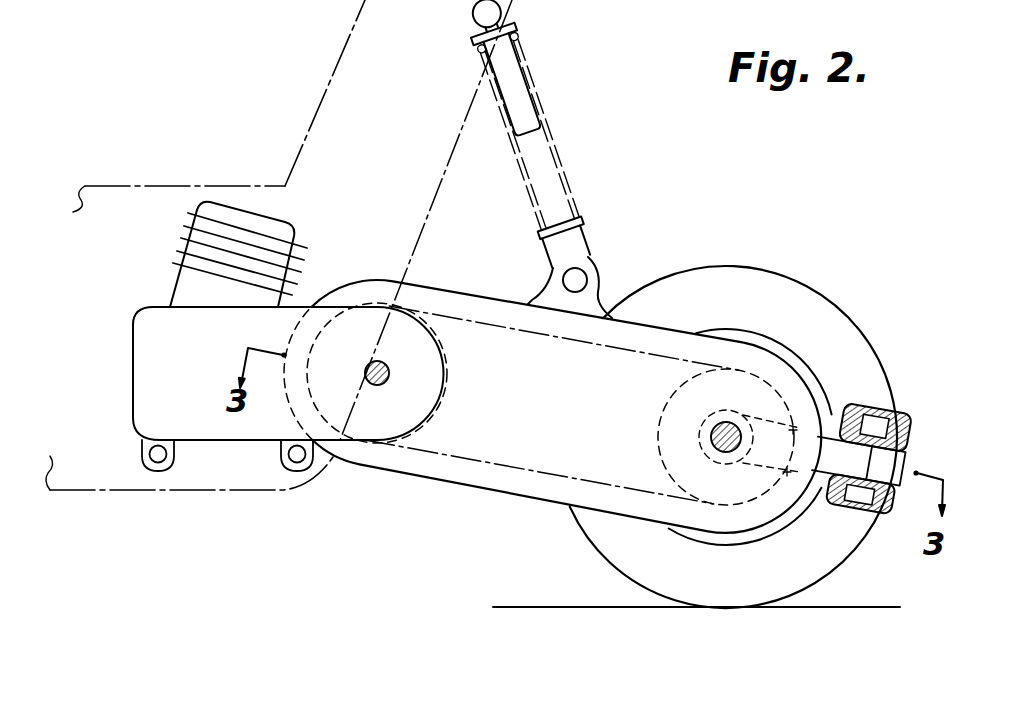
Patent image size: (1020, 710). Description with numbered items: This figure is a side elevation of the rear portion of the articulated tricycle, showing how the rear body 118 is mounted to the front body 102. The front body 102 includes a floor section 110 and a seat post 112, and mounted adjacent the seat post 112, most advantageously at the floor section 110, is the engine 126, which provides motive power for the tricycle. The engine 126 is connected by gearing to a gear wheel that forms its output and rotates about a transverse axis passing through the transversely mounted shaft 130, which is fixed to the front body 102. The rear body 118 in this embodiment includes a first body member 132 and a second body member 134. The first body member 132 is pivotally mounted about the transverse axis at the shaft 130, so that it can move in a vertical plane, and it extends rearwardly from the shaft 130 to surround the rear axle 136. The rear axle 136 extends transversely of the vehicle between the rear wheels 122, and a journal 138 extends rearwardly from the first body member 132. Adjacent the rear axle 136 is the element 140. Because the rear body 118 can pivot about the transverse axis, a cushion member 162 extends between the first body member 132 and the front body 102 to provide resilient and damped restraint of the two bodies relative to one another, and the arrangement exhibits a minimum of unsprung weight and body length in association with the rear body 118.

The front body 102 is at (97, 180).
The floor section 110 is at (100, 492).
The seat post 112 is at (320, 97).
The rear body 118 is at (438, 480).
The rear wheels 122 is at (857, 358).
The engine 126 is at (165, 326).
The shaft 130 is at (390, 375).
The first body member 132 is at (527, 458).
The second body member 134 is at (830, 468).
The rear axle 136 is at (728, 430).
The journal 138 is at (865, 470).
The axle adjuster block 140 is at (905, 432).
The cushion member 162 is at (560, 138).